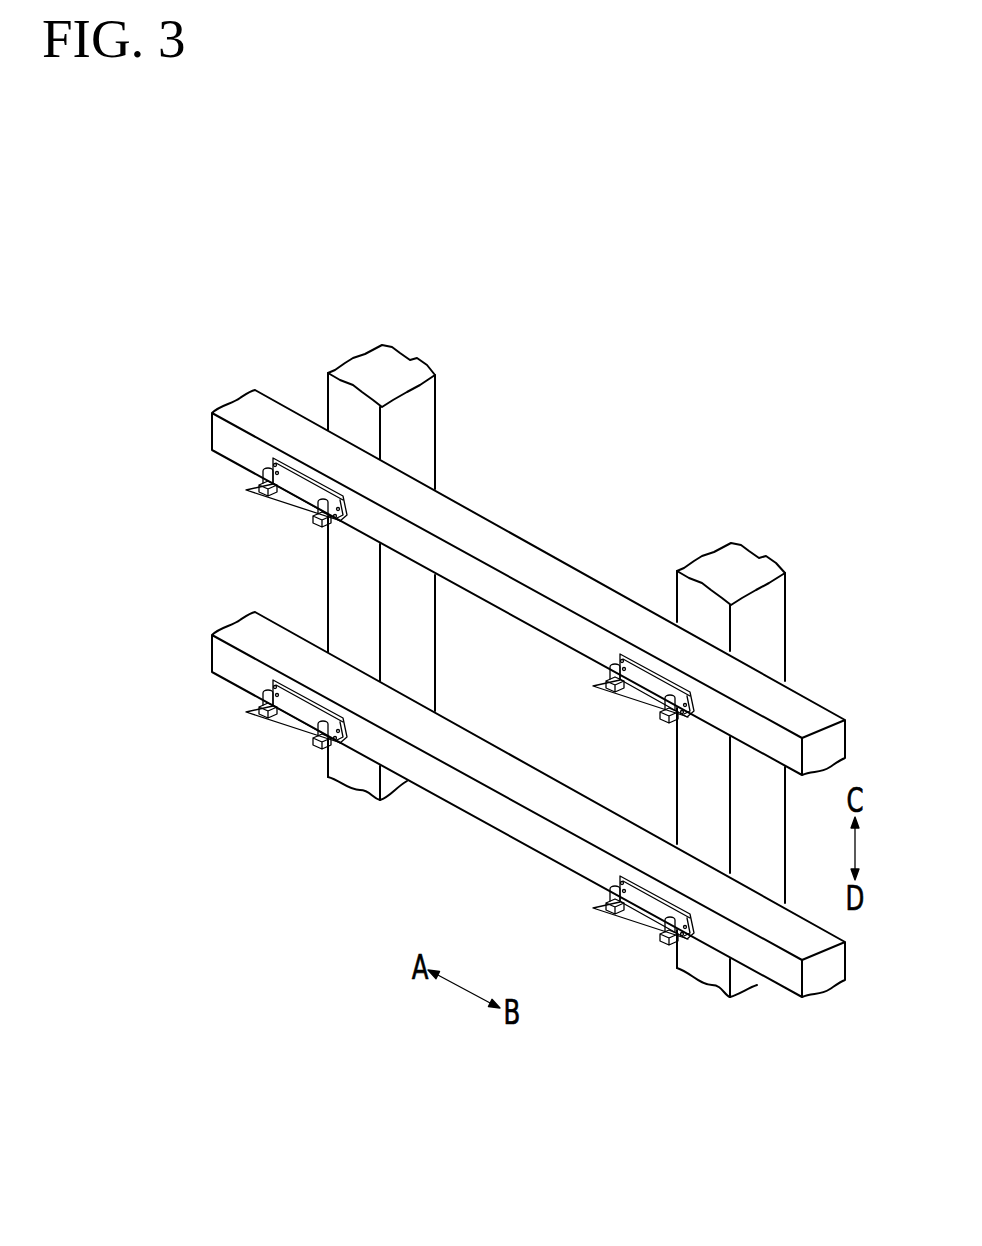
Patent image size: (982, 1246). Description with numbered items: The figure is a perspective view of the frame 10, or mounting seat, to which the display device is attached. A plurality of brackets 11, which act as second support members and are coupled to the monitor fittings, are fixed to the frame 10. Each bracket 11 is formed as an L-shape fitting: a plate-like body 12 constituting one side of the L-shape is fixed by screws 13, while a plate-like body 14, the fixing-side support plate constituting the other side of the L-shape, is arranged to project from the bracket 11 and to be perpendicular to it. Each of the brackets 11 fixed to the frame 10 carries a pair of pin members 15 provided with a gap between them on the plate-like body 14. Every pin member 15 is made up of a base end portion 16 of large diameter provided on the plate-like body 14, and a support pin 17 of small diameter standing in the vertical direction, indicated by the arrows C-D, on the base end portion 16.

The frame 10 is at (785, 608).
The bracket 11 is at (443, 695).
The plate-like body 12 is at (302, 480).
The screw 13 is at (272, 458).
The plate-like body 14 is at (296, 502).
The pin member 15 is at (393, 738).
The base end portion 16 is at (257, 490).
The support pin 17 is at (262, 480).